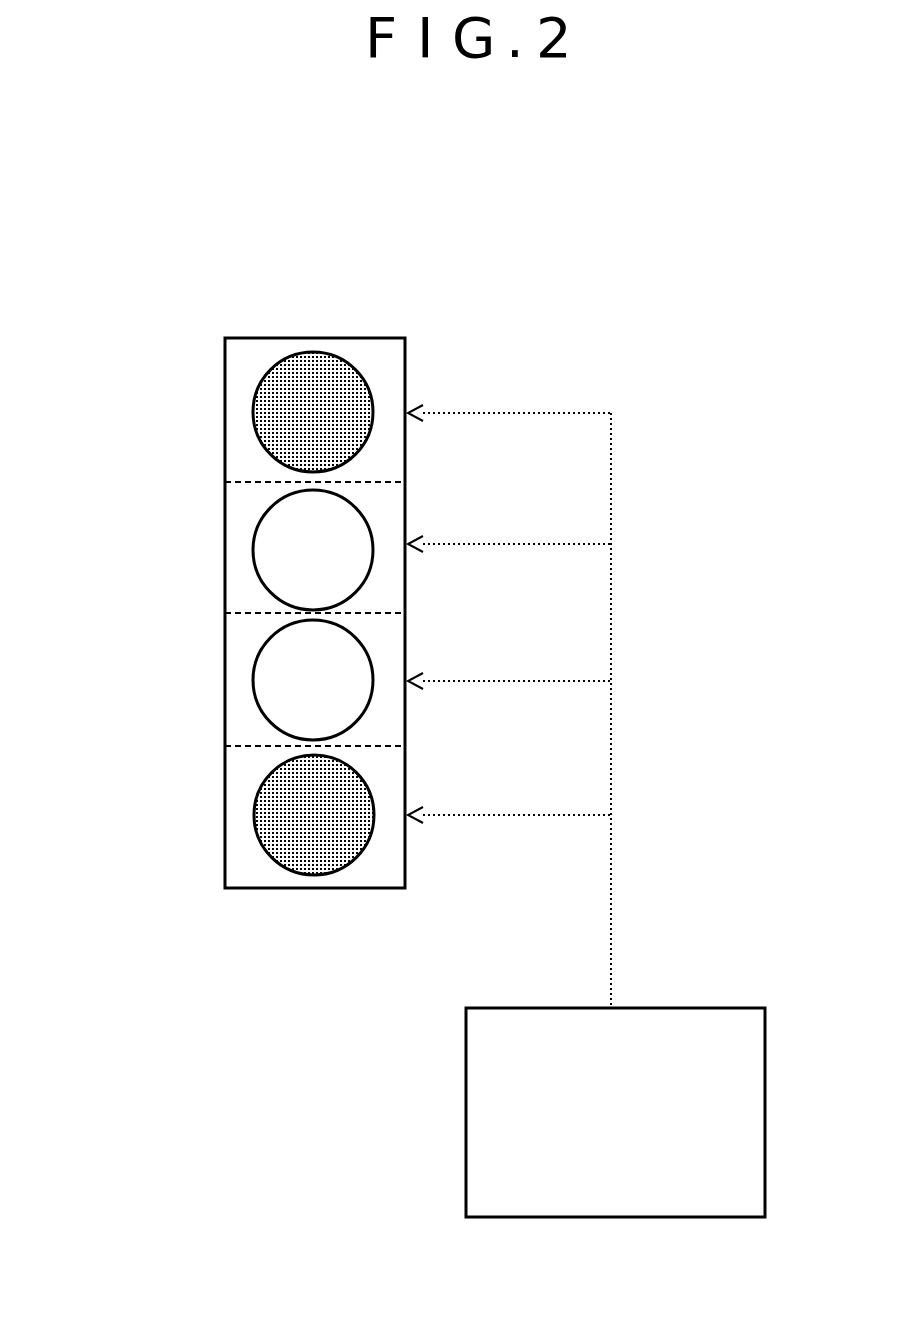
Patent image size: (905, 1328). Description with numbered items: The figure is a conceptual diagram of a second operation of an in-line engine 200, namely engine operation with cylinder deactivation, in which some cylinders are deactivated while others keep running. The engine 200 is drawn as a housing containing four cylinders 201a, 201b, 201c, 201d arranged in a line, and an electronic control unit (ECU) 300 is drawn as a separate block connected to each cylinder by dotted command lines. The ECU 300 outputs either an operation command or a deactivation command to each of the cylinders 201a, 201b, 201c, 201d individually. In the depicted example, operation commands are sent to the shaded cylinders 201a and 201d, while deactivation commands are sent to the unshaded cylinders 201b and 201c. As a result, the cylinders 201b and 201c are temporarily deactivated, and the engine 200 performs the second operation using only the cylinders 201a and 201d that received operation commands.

The engine 200 is at (403, 226).
The cylinder 201a is at (316, 414).
The cylinder 201b is at (316, 550).
The cylinder 201c is at (316, 681).
The cylinder 201d is at (316, 815).
The electronic control unit (ECU) 300 is at (703, 1008).